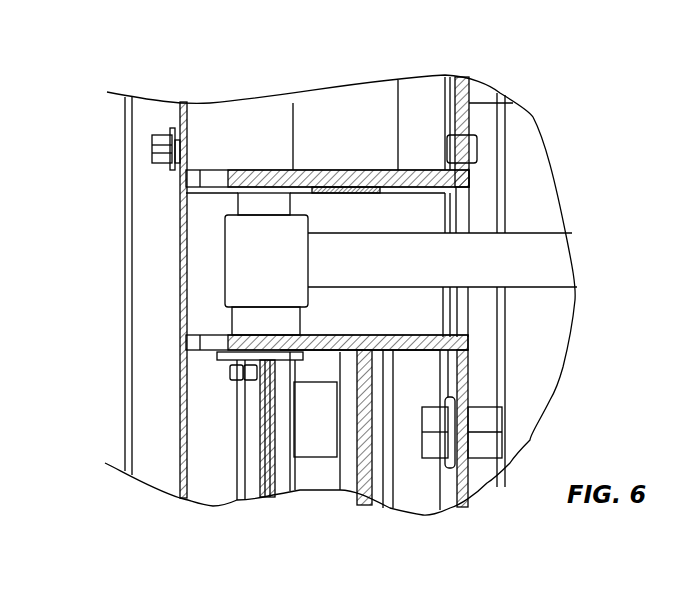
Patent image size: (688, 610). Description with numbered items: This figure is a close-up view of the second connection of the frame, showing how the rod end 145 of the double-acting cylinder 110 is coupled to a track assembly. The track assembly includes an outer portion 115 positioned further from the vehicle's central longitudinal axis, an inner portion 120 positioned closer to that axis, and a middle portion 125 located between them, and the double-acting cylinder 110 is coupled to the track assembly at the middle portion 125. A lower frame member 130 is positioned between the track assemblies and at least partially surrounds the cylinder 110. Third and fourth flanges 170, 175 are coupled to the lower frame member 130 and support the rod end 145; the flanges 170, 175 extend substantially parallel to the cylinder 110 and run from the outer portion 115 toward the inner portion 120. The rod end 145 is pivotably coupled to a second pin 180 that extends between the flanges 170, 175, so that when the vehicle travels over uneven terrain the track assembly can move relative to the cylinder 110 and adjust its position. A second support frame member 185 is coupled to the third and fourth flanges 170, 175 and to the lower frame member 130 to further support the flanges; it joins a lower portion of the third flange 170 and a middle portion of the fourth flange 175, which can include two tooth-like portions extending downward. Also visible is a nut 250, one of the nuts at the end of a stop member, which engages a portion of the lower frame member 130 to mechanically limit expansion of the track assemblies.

The double-acting cylinder 110 is at (545, 262).
The outer portion 115 is at (118, 380).
The inner portion 120 is at (510, 362).
The middle portion 125 is at (323, 78).
The lower frame member 130 is at (470, 103).
The rod end 145 is at (247, 143).
The third flange 170 is at (267, 170).
The fourth flange 175 is at (302, 334).
The second pin 180 is at (232, 338).
The second support frame member 185 is at (203, 243).
The nut 250 is at (437, 455).